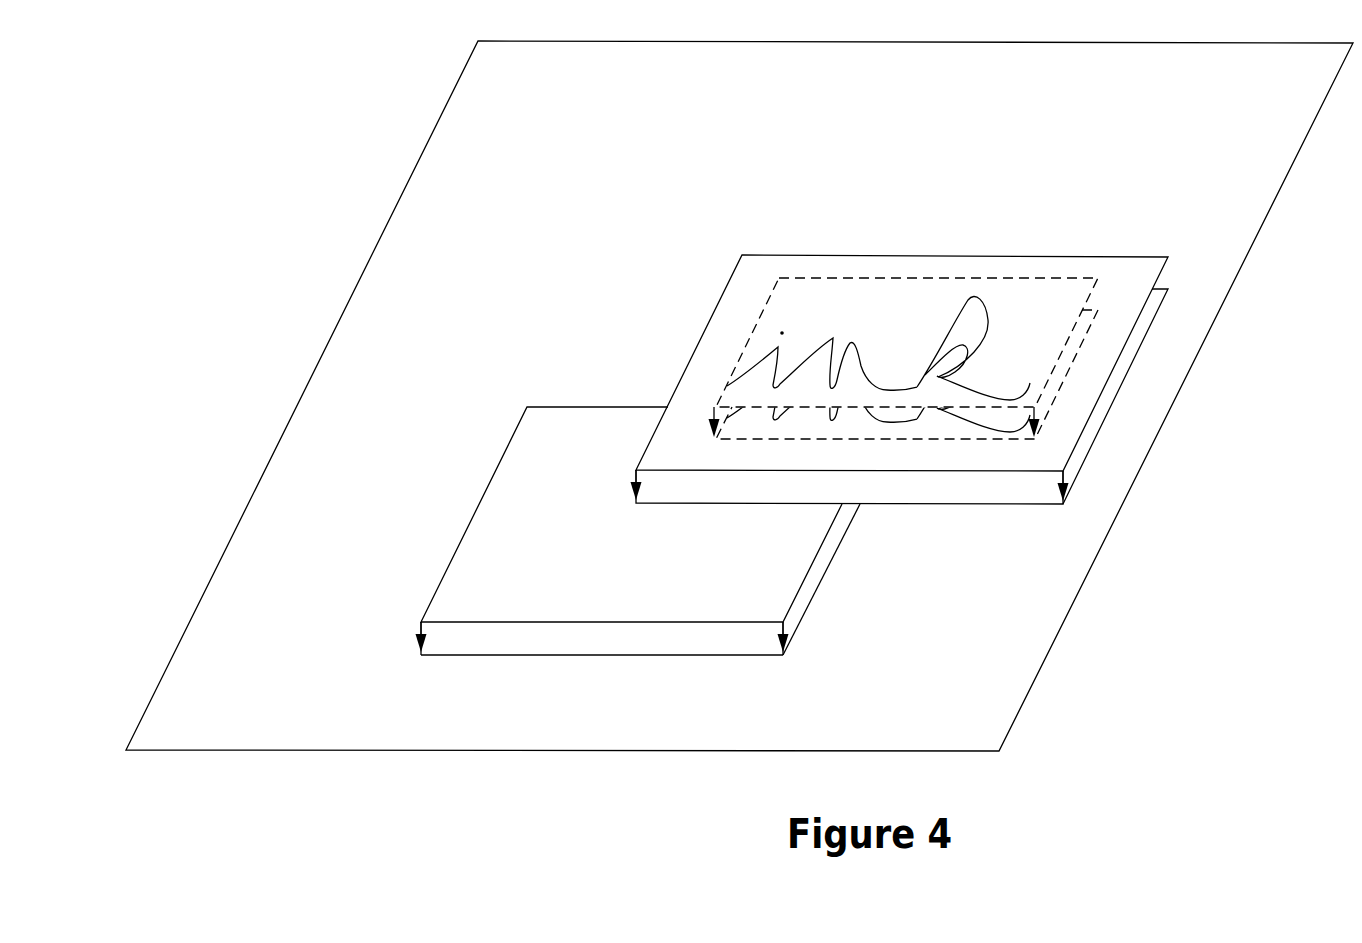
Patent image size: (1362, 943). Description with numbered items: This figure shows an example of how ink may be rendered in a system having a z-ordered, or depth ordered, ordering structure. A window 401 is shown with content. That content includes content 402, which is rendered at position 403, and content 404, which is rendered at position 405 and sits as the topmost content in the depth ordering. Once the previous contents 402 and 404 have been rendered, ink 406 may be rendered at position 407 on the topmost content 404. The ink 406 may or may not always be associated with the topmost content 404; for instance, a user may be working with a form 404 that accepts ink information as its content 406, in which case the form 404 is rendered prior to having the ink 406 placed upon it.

The window 401 is at (1108, 533).
The content 402 is at (840, 517).
The position 403 is at (837, 545).
The content 404 is at (1108, 383).
The position 405 is at (1100, 428).
The ink 406 is at (1068, 342).
The position 407 is at (1067, 375).